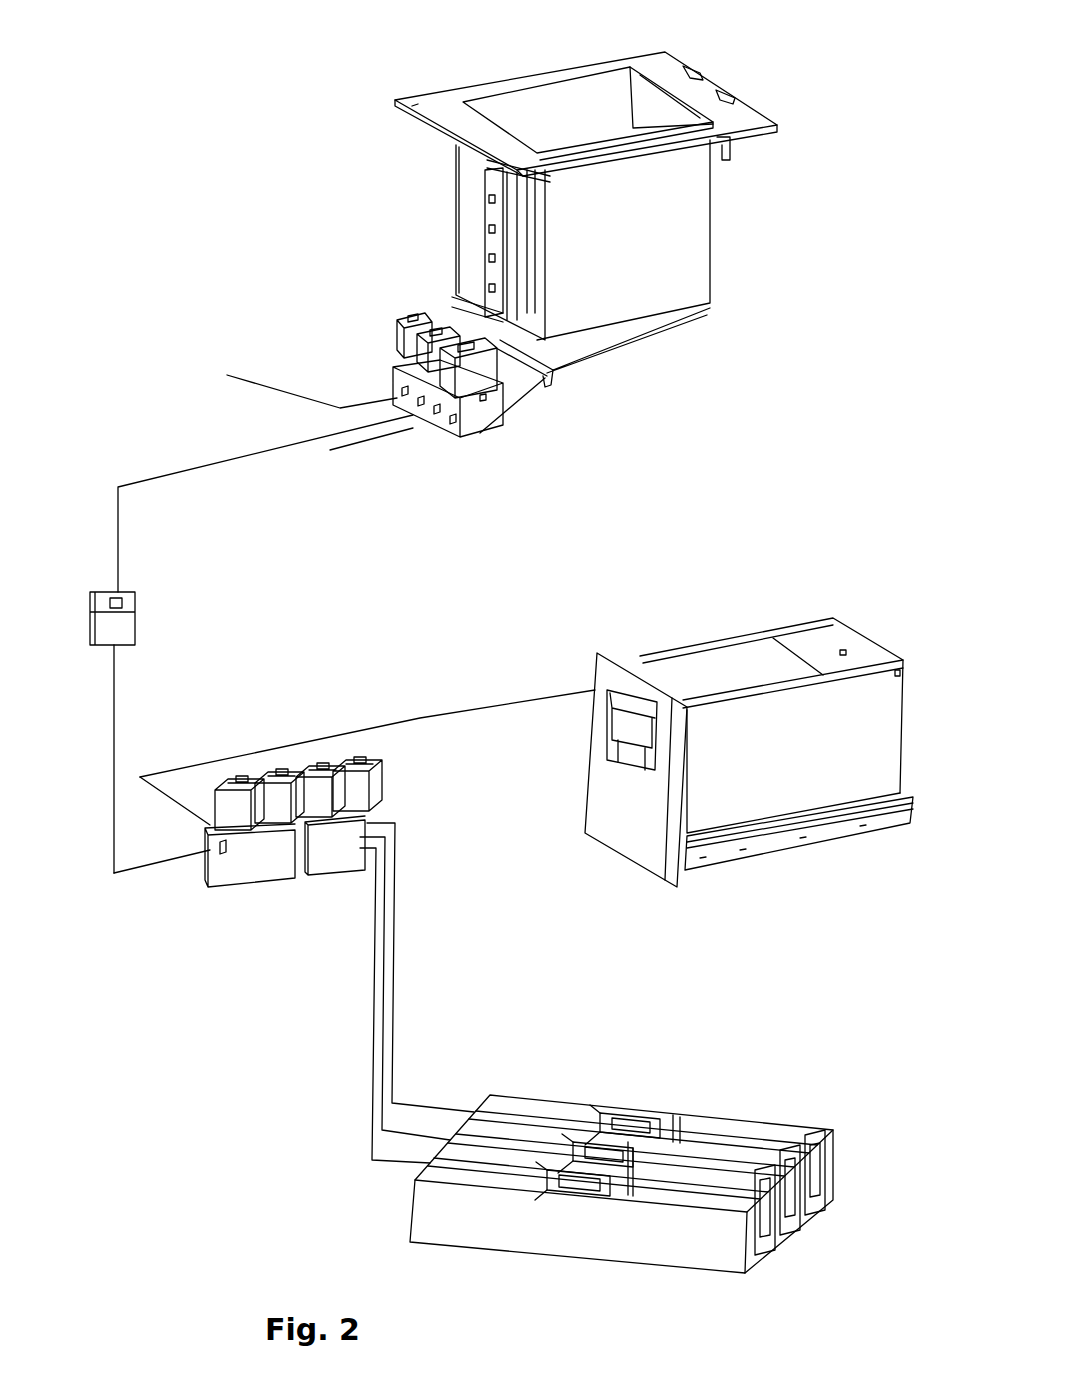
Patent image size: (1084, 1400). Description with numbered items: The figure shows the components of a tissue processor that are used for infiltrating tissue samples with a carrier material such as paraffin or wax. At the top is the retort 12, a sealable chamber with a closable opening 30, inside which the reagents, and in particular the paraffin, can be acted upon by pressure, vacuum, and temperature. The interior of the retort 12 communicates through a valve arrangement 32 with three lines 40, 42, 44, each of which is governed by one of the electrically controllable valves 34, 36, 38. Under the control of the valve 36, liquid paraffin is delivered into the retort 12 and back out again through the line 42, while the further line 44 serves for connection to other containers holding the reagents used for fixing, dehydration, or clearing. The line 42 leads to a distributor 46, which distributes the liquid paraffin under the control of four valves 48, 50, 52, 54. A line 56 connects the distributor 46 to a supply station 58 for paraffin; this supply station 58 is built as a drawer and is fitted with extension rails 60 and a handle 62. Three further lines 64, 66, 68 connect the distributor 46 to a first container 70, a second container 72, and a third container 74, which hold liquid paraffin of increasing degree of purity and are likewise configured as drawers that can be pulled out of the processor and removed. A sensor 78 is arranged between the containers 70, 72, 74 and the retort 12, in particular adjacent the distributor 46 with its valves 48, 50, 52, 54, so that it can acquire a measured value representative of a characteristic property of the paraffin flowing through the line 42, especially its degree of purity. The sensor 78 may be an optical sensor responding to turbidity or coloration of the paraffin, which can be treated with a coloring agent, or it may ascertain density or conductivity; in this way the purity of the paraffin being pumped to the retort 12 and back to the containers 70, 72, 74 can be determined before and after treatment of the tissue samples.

The retort 12 is at (782, 218).
The opening 30 is at (548, 103).
The valve arrangement 32 is at (493, 440).
The valve 34 is at (410, 318).
The valve 36 is at (430, 318).
The valve 38 is at (483, 378).
The line 40 is at (265, 380).
The line 42 is at (255, 455).
The further line 44 is at (395, 440).
The distributor 46 is at (277, 912).
The valve 48 is at (235, 777).
The valve 50 is at (288, 772).
The valve 52 is at (310, 766).
The valve 54 is at (378, 760).
The line 56 is at (478, 720).
The supply station 58 is at (842, 566).
The extension rails 60 is at (830, 842).
The handle 62 is at (637, 705).
The line 64 is at (370, 1035).
The line 66 is at (370, 1072).
The line 68 is at (370, 1110).
The first container 70 is at (753, 1260).
The second container 72 is at (812, 1218).
The third container 74 is at (843, 1165).
The sensor 78 is at (140, 620).